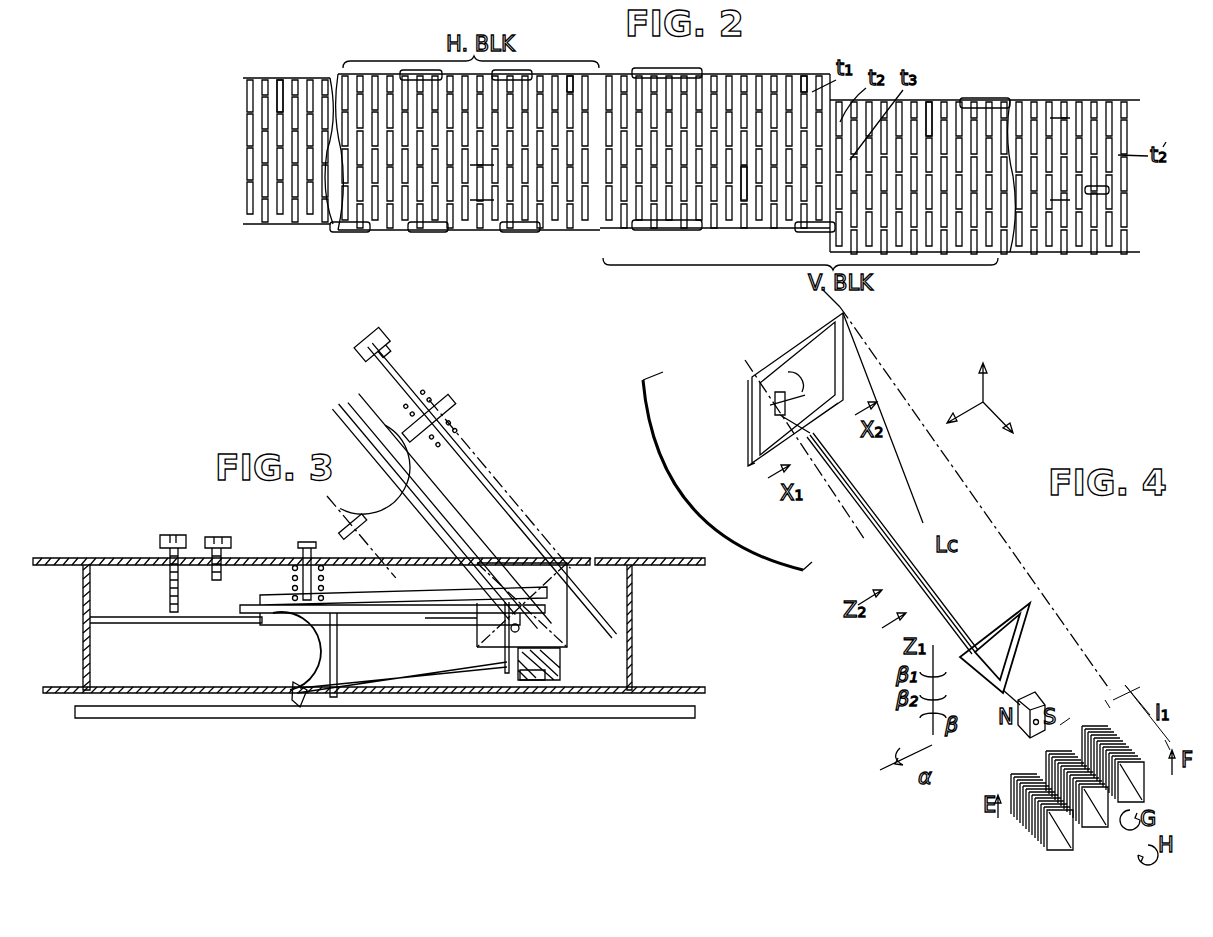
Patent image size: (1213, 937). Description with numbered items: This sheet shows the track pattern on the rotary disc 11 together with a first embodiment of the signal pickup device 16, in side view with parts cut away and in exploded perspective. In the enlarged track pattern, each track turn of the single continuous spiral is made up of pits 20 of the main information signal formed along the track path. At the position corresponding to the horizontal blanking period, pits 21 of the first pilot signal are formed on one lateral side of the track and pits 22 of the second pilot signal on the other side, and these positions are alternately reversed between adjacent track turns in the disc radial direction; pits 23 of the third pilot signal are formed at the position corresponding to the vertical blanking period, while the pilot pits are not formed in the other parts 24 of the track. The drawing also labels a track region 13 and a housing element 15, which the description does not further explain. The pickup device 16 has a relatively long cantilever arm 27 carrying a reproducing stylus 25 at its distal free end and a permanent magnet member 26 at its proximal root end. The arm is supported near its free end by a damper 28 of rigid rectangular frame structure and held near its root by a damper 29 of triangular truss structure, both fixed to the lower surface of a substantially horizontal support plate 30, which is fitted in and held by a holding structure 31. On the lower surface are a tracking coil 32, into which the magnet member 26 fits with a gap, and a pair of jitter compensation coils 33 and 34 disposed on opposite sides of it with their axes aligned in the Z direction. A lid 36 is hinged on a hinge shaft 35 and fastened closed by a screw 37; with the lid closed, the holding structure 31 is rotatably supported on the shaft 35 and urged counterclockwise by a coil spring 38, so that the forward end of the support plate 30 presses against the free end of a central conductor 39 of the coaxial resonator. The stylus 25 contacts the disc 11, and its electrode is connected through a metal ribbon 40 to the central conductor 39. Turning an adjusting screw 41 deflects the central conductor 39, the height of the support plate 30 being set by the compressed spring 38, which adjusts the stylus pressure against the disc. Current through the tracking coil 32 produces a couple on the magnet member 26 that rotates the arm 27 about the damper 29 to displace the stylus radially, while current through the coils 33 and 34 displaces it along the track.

In FIG. 2, the rotary disc 11 is at (941, 55).
In FIG. 3, the rotary disc 11 is at (660, 718).
In FIG. 4, the rotary disc 11 is at (694, 454).
In FIG. 2, the horizontal track block 13 is at (381, 78).
In FIG. 3, the housing 15 is at (648, 558).
In FIG. 3, the signal pickup device 16 is at (316, 664).
In FIG. 4, the signal pickup device 16 is at (1017, 474).
In FIG. 2, the pits of the main information signal 20 is at (282, 80).
In FIG. 2, the pits of the first pilot signal 21 is at (480, 228).
In FIG. 2, the pits of the second pilot signal 22 is at (418, 70).
In FIG. 2, the pits of the third pilot signal 23 is at (700, 68).
In FIG. 2, the other parts of the track 24 is at (321, 230).
In FIG. 3, the reproducing stylus 25 is at (300, 707).
In FIG. 4, the reproducing stylus 25 is at (778, 407).
In FIG. 3, the permanent magnet member 26 is at (530, 682).
In FIG. 4, the permanent magnet member 26 is at (1015, 738).
In FIG. 3, the cantilever arm 27 is at (400, 690).
In FIG. 4, the cantilever arm 27 is at (893, 540).
In FIG. 3, the damper of rigid frame structure 28 is at (338, 648).
In FIG. 4, the damper of rigid frame structure 28 is at (843, 357).
In FIG. 3, the damper of truss structure 29 is at (507, 675).
In FIG. 4, the damper of truss structure 29 is at (1035, 620).
In FIG. 3, the support plate 30 is at (397, 615).
In FIG. 4, the support plate 30 is at (1007, 545).
In FIG. 3, the holding structure 31 is at (440, 618).
In FIG. 3, the tracking coil 32 is at (560, 665).
In FIG. 4, the tracking coil 32 is at (1097, 828).
In FIG. 4, the jitter compensation coil 33 is at (1047, 838).
In FIG. 4, the jitter compensation coil 34 is at (1146, 795).
In FIG. 3, the hinge shaft 35 is at (518, 628).
In FIG. 3, the lid 36 is at (394, 556).
In FIG. 3, the screw 37 is at (222, 537).
In FIG. 3, the coil spring 38 is at (300, 570).
In FIG. 3, the central conductor 39 is at (175, 623).
In FIG. 3, the metal ribbon 40 is at (318, 642).
In FIG. 4, the metal ribbon 40 is at (775, 342).
In FIG. 3, the adjusting screw 41 is at (172, 535).